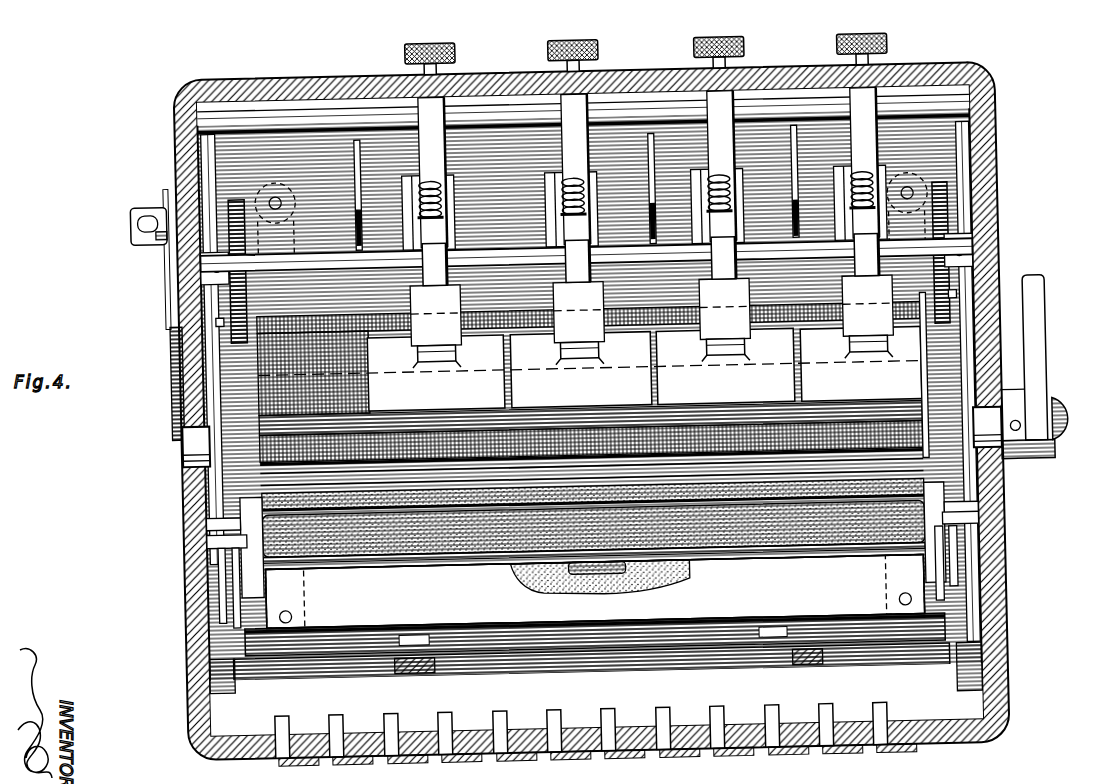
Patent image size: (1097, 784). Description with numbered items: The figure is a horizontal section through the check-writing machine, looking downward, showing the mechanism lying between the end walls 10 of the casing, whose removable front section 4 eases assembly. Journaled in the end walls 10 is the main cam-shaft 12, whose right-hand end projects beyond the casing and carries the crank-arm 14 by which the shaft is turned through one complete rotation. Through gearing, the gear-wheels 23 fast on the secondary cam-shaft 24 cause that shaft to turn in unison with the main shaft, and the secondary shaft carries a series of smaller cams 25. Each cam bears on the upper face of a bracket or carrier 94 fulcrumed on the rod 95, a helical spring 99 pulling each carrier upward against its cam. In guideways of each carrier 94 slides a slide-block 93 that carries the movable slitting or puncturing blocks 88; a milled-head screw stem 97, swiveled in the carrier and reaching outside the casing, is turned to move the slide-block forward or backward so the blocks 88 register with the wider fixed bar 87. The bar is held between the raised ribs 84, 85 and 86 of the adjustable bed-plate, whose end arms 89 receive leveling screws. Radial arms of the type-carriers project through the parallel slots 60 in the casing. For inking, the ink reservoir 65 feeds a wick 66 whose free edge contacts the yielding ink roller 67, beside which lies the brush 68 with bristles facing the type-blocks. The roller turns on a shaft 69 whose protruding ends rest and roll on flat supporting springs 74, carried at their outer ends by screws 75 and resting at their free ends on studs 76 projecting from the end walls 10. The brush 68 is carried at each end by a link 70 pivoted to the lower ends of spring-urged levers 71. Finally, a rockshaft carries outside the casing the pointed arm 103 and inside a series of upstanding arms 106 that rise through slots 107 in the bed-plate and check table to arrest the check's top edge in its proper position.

The front section 4 is at (596, 673).
The end walls 10 is at (185, 160).
The main cam-shaft 12 is at (592, 437).
The crank-arm 14 is at (1047, 352).
The gear-wheels 23 is at (583, 252).
The secondary cam-shaft 24 is at (500, 247).
The cams 25 is at (650, 259).
The slots 60 is at (272, 756).
The ink reservoir 65 is at (595, 591).
The wick 66 is at (630, 583).
The roller 67 is at (400, 552).
The brush 68 is at (645, 488).
The shaft 69 is at (204, 516).
The link 70 is at (210, 540).
The levers 71 is at (229, 588).
The supporting springs 74 is at (208, 470).
The screws 75 is at (215, 570).
The studs 76 is at (218, 314).
The raised rib 84 is at (593, 382).
The raised rib 85 is at (425, 412).
The raised rib 86 is at (320, 312).
The bar 87 is at (313, 373).
The blocks 88 is at (589, 369).
The arms 89 is at (596, 398).
The slide-blocks 93 is at (458, 350).
The bracket or carrier 94 is at (452, 190).
The rod 95 is at (318, 116).
The screw stem 97 is at (845, 64).
The helical spring 99 is at (452, 195).
The arm 103 is at (160, 235).
The upstanding arms 106 is at (366, 220).
The slots 107 is at (366, 150).